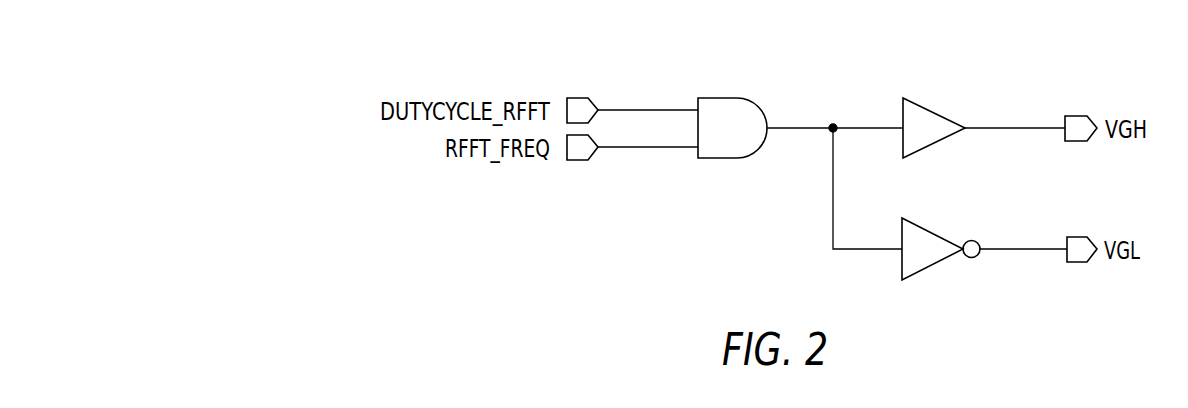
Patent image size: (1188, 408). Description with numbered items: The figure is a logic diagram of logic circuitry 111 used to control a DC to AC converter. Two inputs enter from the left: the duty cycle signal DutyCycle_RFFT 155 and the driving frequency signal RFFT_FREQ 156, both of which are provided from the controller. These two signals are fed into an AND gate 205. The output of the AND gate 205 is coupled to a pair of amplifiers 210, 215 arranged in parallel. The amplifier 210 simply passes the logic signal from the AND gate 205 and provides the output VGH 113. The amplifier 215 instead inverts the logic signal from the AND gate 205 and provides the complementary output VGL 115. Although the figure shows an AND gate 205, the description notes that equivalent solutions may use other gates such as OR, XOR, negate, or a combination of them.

The logic circuitry 111 is at (1047, 53).
The VGH 113 is at (1075, 115).
The VGL 115 is at (1075, 236).
The duty cycle signal DutyCycle_RFFT 155 is at (576, 97).
The driving frequency signal RFFT_FREQ 156 is at (576, 161).
The AND gate 205 is at (715, 97).
The amplifier 210 is at (929, 108).
The inverting amplifier 215 is at (928, 264).